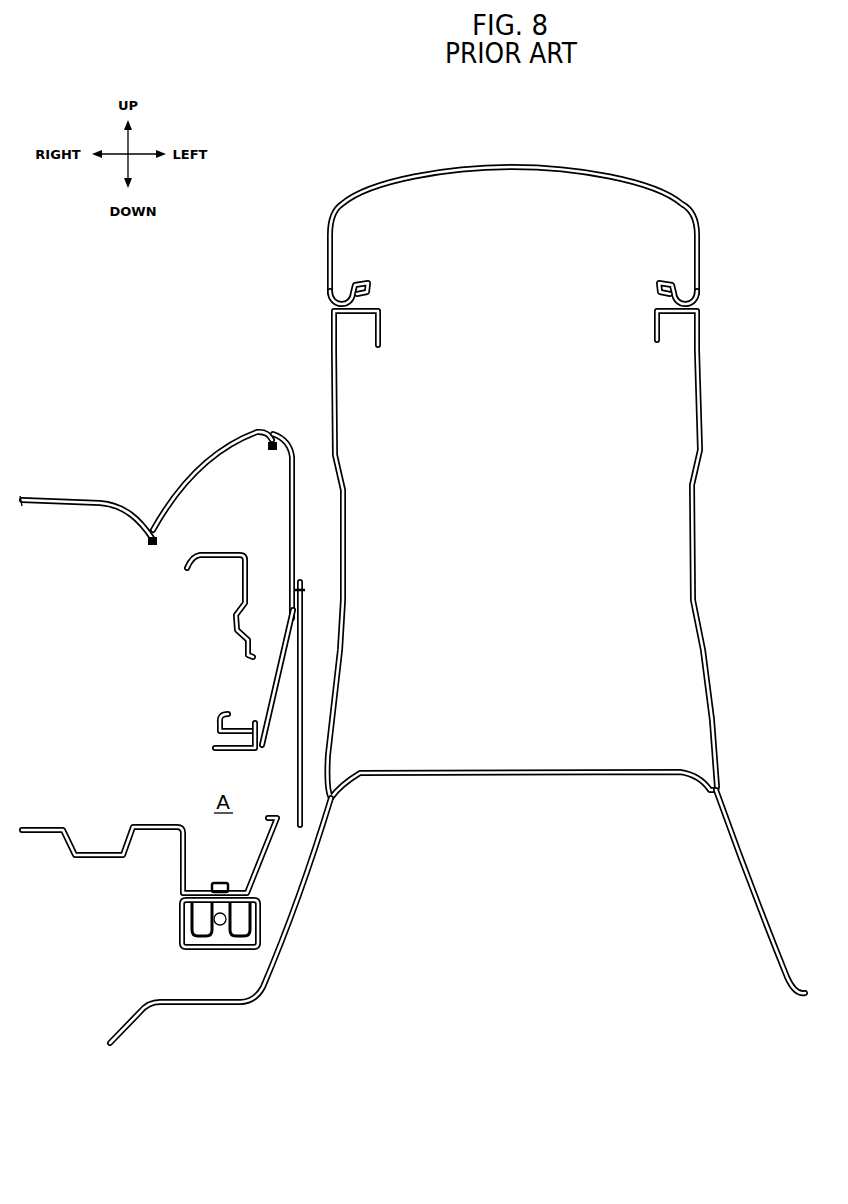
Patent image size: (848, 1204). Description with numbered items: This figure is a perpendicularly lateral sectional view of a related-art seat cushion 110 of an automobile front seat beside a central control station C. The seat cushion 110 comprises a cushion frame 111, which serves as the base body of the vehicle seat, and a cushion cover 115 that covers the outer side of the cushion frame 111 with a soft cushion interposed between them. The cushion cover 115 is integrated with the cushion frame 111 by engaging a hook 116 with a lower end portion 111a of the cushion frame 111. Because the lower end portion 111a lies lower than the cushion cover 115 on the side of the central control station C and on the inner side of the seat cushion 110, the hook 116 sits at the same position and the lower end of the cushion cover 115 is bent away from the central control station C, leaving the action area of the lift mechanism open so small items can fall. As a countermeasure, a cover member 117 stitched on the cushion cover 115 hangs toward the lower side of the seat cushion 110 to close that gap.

The central control station C is at (512, 165).
The seat cushion 110 is at (108, 432).
The cushion cover 115 is at (187, 477).
The cushion frame 111 is at (223, 552).
The lower end portion 111a is at (218, 725).
The hook 116 is at (215, 747).
The cover member 117 is at (303, 723).